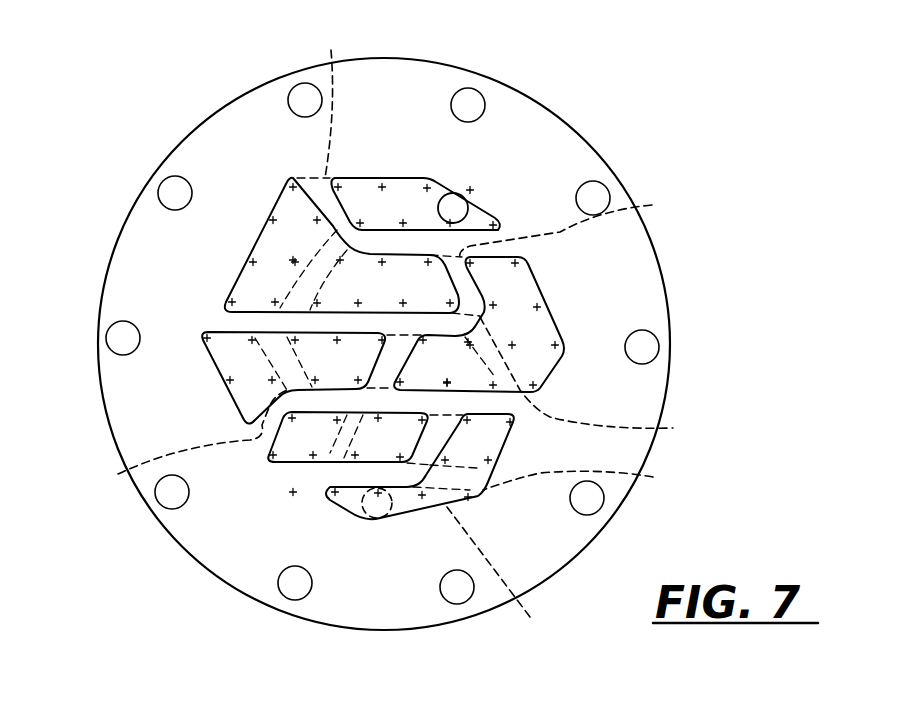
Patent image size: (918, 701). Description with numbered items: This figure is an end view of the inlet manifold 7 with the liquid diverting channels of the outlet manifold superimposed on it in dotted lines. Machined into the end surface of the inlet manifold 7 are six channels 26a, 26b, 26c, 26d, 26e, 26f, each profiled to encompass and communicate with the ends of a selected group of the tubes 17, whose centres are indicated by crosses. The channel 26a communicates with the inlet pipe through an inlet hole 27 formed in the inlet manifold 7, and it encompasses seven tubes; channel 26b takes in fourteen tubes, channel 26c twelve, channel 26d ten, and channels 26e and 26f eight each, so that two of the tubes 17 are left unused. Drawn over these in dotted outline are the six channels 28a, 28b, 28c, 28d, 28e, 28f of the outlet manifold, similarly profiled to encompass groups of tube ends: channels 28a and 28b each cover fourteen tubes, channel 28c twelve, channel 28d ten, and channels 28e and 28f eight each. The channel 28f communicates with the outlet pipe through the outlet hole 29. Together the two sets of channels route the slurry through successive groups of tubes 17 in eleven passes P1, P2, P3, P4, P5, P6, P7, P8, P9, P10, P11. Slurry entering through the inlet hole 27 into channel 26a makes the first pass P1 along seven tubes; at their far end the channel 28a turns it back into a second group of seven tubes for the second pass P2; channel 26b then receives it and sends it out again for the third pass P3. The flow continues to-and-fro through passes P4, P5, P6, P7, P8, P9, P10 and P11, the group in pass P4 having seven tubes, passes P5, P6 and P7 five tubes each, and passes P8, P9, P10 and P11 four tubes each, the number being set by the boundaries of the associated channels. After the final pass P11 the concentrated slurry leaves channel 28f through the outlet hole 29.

The inlet manifold 7 is at (560, 118).
The tubes 17 is at (250, 262).
The channel 26a is at (397, 178).
The channel 26b is at (277, 213).
The channel 26c is at (550, 312).
The channel 26d is at (213, 332).
The channel 26e is at (280, 465).
The channel 26f is at (483, 492).
The inlet hole 27 is at (470, 206).
The channel 28a is at (325, 100).
The channel 28b is at (579, 227).
The channel 28c is at (596, 381).
The channel 28d is at (182, 441).
The channel 28e is at (592, 486).
The channel 28f is at (510, 574).
The outlet hole 29 is at (367, 517).
The first pass P1 is at (416, 206).
The second pass P2 is at (295, 245).
The third pass P3 is at (372, 282).
The fourth pass P4 is at (501, 324).
The fifth pass P5 is at (434, 361).
The sixth pass P6 is at (339, 360).
The seventh pass P7 is at (240, 359).
The eighth pass P8 is at (305, 437).
The ninth pass P9 is at (389, 438).
The tenth pass P10 is at (478, 440).
The eleventh pass P11 is at (410, 515).